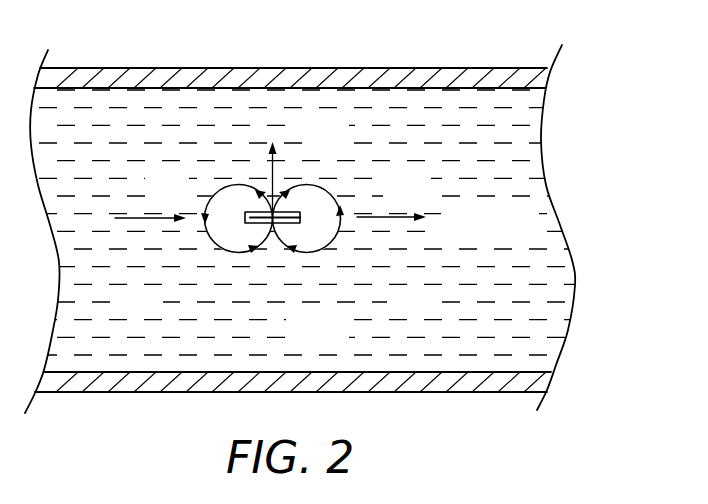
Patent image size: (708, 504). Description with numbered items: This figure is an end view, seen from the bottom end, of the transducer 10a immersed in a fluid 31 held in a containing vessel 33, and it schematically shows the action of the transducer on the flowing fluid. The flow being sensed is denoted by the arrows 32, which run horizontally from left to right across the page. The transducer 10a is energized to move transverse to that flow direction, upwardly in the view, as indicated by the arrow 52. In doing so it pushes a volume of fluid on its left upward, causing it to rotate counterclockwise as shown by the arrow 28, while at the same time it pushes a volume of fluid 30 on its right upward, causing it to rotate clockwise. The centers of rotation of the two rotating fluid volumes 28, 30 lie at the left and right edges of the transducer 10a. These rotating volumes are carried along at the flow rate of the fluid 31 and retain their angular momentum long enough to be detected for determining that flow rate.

The transducer 10a is at (274, 250).
The rotating fluid volume 28 is at (213, 248).
The rotating fluid volume 30 is at (330, 247).
The fluid 31 is at (536, 151).
The flow direction arrow 32 is at (133, 216).
The containing vessel 33 is at (325, 68).
The transducer motion arrow 52 is at (273, 178).